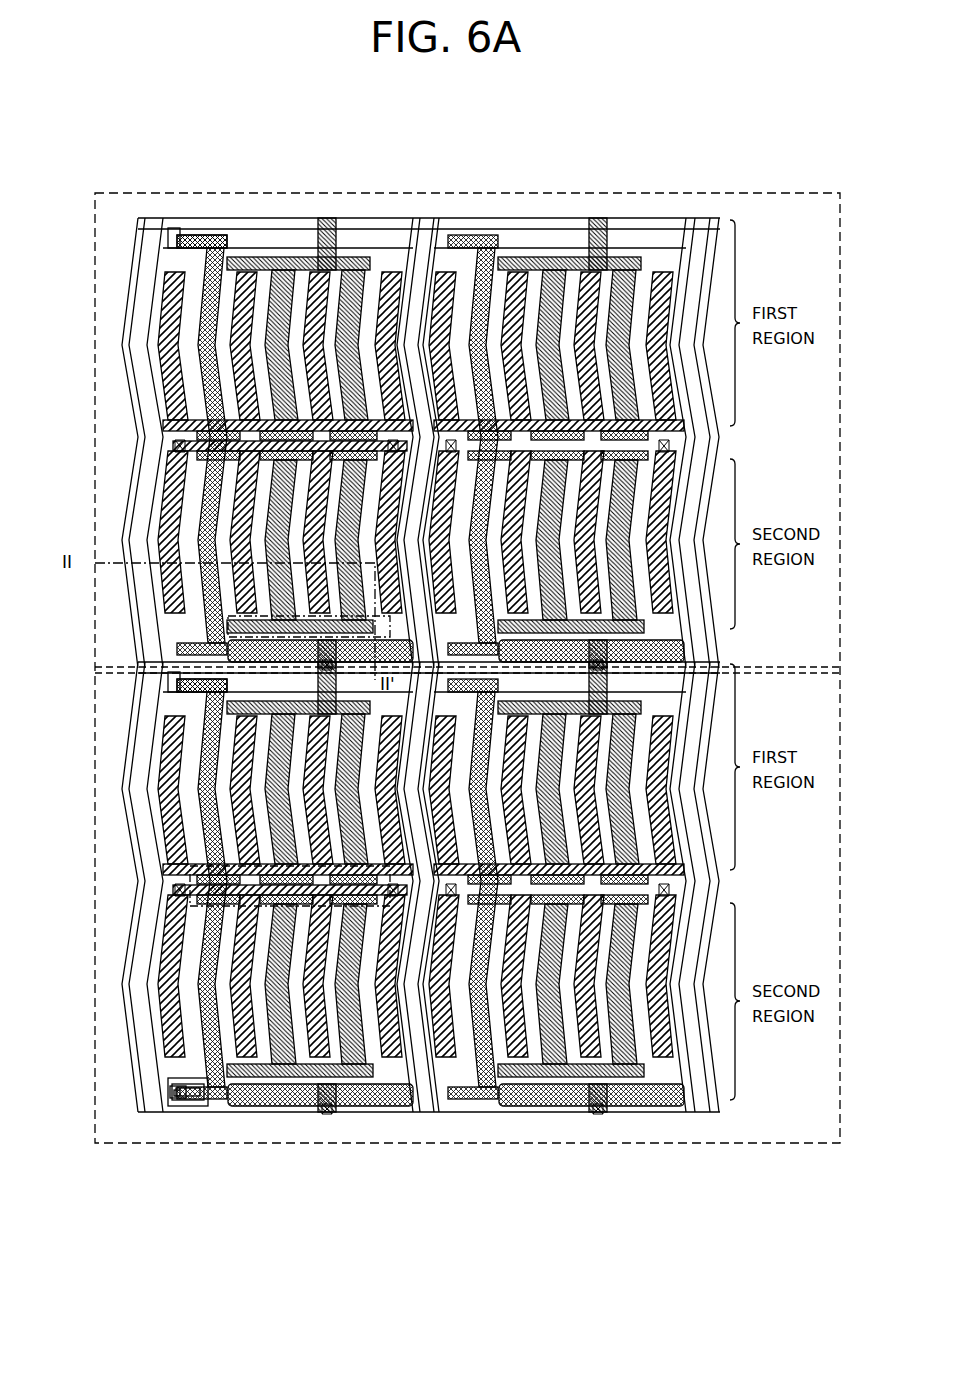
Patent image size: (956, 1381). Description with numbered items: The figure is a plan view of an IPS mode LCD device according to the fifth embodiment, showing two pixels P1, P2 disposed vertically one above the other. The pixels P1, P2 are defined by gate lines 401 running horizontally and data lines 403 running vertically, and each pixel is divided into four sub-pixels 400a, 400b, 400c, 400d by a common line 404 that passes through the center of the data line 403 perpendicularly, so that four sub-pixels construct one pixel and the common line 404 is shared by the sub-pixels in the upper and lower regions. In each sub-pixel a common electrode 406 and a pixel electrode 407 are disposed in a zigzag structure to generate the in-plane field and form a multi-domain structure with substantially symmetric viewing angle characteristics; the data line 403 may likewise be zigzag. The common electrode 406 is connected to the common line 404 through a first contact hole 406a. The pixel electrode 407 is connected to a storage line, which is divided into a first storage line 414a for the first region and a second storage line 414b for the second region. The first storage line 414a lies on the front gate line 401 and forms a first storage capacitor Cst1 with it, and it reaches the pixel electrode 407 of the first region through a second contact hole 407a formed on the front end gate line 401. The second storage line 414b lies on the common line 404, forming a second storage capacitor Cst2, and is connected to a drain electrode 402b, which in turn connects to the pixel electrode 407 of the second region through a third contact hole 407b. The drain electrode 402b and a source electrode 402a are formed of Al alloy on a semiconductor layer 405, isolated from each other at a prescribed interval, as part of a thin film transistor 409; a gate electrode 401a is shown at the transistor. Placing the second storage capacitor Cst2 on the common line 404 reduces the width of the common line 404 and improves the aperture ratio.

The gate line 401 is at (140, 226).
The gate electrode 401a is at (180, 1082).
The source electrode 402a is at (185, 1097).
The drain electrode 402b is at (198, 1106).
The data line 403 is at (135, 990).
The common line 404 is at (133, 438).
The semiconductor layer 405 is at (182, 1108).
The common electrode 406 is at (255, 282).
The first contact hole 406a is at (180, 890).
The pixel electrode 407 is at (296, 250).
The second contact hole 407a is at (216, 262).
The third contact hole 407b is at (215, 713).
The thin film transistor 409 is at (175, 1105).
The sub-pixel 400a is at (363, 1116).
The sub-pixel 400b is at (363, 214).
The sub-pixel 400c is at (568, 214).
The sub-pixel 400d is at (595, 1116).
The first storage line 414a is at (680, 654).
The second storage line 414b is at (680, 900).
The first storage capacitor Cst1 is at (245, 617).
The second storage capacitor Cst2 is at (205, 868).
The pixel P1 is at (393, 427).
The pixel P2 is at (135, 673).